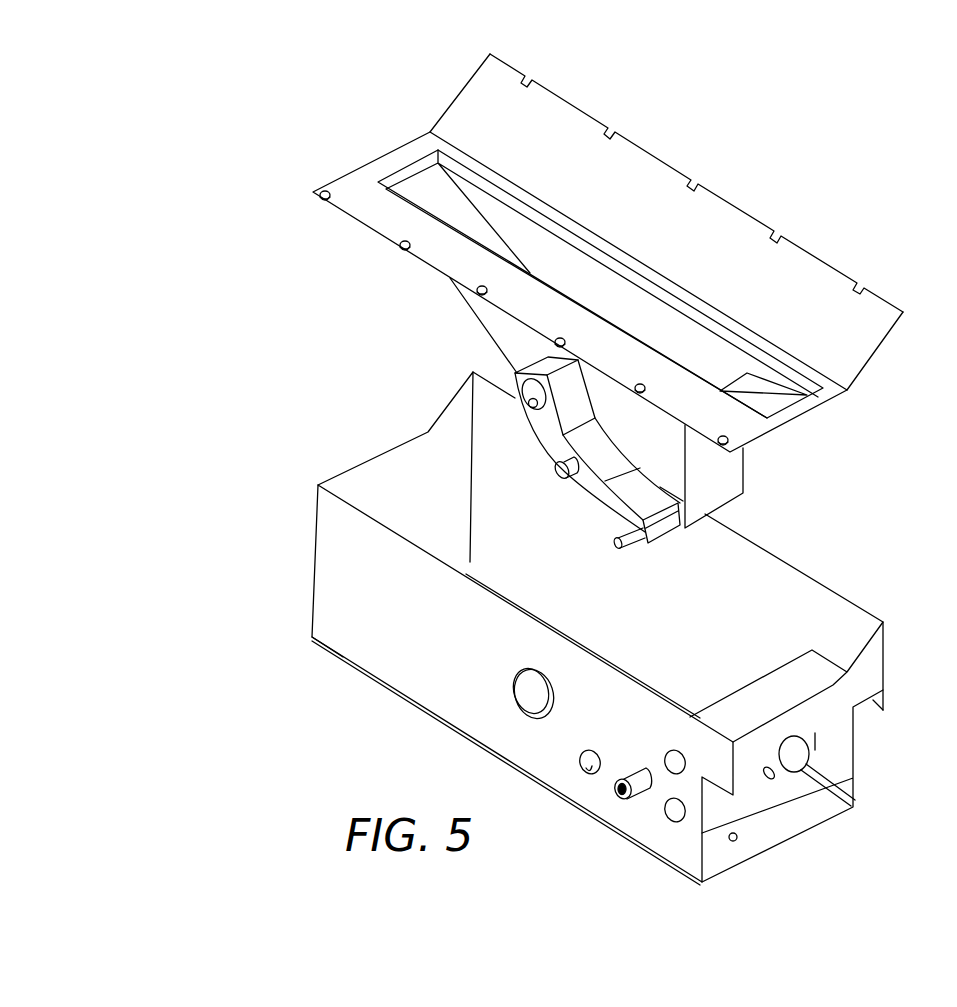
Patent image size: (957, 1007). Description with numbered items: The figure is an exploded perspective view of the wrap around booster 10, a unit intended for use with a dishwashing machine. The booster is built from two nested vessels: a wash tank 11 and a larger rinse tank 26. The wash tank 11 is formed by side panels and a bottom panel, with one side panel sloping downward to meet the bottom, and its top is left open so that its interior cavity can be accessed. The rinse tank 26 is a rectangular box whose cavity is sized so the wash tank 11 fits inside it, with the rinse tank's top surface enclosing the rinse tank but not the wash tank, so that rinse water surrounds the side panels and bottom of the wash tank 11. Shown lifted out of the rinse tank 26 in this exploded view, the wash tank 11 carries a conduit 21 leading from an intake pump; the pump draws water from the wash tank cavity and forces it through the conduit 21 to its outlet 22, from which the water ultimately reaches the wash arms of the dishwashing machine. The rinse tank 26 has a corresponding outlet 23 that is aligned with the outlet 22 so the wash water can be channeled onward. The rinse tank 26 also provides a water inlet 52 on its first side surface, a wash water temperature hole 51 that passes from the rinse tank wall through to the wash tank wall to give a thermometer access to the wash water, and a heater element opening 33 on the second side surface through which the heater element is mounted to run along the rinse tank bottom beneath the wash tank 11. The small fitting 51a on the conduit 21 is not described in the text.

The wrap around booster 10 is at (189, 316).
The wash tank 11 is at (885, 284).
The conduit 21 is at (588, 494).
The outlet 22 is at (526, 398).
The bushing 51a is at (558, 470).
The rinse tank 26 is at (857, 589).
The outlet 23 is at (527, 714).
The wash water temperature hole 51 is at (582, 770).
The water inlet 52 is at (616, 792).
The heater element opening 33 is at (789, 766).